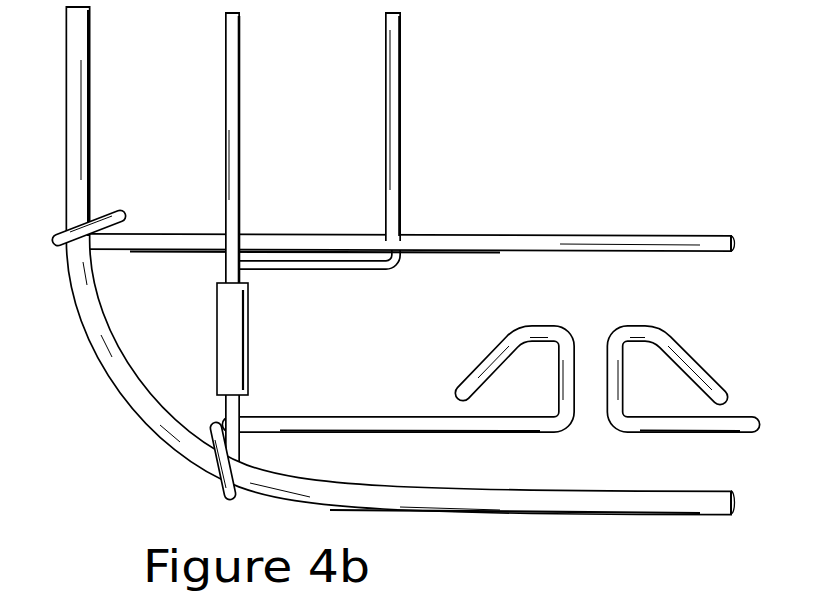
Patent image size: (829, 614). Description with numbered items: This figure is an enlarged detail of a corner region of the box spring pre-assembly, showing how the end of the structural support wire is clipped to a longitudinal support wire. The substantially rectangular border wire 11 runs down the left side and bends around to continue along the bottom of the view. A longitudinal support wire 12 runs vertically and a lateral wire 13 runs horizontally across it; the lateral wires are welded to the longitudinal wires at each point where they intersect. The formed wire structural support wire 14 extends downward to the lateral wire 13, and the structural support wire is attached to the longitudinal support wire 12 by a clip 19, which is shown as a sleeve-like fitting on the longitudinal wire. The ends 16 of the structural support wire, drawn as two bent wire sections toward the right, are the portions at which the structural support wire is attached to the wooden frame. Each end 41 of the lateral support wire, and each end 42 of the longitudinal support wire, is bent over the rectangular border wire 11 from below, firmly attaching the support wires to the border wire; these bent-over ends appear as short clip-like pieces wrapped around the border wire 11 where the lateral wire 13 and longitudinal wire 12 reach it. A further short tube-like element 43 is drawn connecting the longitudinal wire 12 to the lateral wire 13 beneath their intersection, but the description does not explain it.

The rectangular border wire 11 is at (72, 70).
The longitudinal support wire 12 is at (245, 101).
The lateral wire 13 is at (500, 242).
The structural support wire 14 is at (407, 81).
The end of the structural support wire 16 is at (562, 447).
The clip 19 is at (224, 345).
The end of lateral support wire 41 is at (53, 254).
The end of longitudinal support wire 42 is at (224, 498).
The bypass tube 43 is at (333, 270).